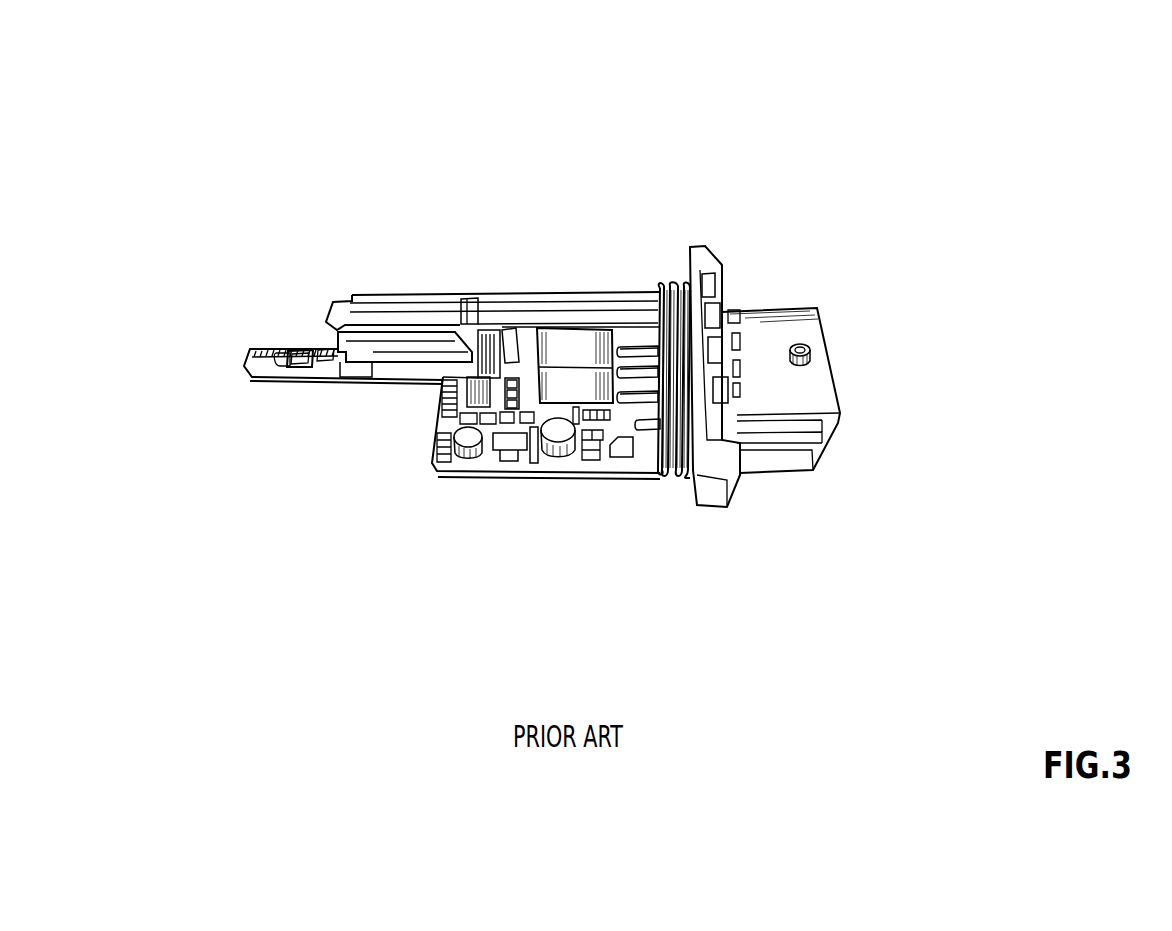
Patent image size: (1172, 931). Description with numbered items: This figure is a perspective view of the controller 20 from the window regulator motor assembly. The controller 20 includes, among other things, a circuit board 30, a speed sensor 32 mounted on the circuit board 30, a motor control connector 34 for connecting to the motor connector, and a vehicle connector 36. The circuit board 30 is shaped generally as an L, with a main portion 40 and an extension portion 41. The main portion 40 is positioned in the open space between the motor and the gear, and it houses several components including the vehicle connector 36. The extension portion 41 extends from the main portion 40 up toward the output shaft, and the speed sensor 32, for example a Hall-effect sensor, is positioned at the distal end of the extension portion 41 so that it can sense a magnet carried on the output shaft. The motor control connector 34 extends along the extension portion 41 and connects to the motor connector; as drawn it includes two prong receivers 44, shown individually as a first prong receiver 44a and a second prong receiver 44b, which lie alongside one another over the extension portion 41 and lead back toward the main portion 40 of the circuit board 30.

The controller 20 is at (783, 113).
The circuit board 30 is at (518, 468).
The speed sensor 32 is at (297, 352).
The motor control connector 34 is at (391, 483).
The vehicle connector 36 is at (822, 362).
The main portion 40 is at (587, 468).
The extension portion 41 is at (270, 377).
The prong receivers 44 is at (455, 389).
The first prong receiver 44a is at (393, 328).
The second prong receiver 44b is at (414, 362).